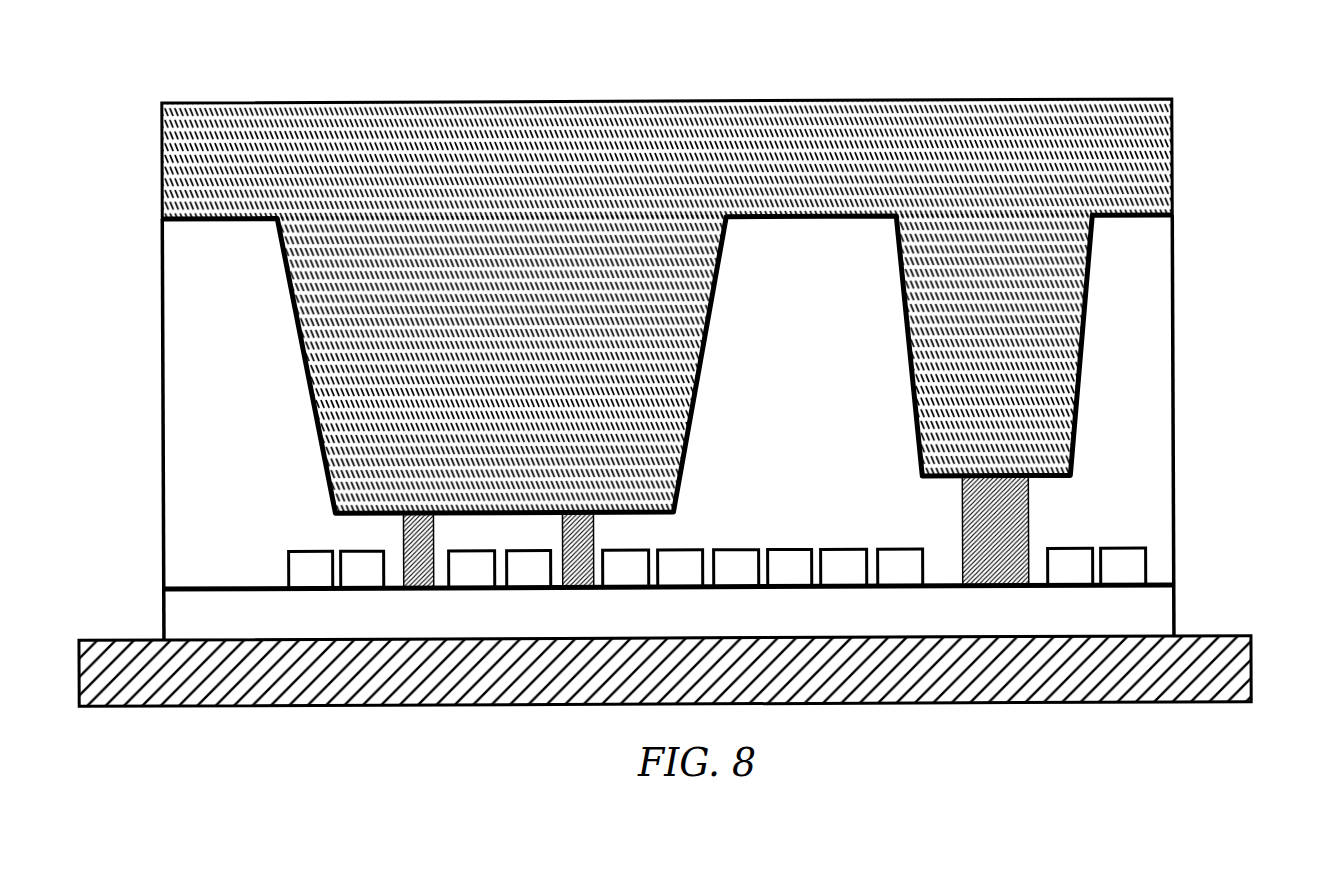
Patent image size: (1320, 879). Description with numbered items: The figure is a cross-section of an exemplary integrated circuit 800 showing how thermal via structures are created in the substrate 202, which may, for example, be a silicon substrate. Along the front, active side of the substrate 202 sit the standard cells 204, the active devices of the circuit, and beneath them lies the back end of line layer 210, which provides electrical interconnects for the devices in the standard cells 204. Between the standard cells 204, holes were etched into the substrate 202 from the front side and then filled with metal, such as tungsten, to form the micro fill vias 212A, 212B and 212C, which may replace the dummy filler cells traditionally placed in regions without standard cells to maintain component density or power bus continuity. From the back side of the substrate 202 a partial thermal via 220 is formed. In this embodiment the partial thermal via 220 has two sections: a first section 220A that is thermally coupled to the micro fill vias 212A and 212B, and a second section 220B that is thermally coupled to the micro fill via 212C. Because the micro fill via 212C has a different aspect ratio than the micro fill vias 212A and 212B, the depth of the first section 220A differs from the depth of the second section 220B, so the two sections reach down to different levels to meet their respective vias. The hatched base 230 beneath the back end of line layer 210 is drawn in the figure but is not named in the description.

The integrated circuit 800 is at (1232, 124).
The partial thermal via 220 is at (1172, 152).
The first section 220A is at (502, 364).
The second section 220B is at (994, 344).
The substrate 202 is at (668, 427).
The standard cells 204 is at (1060, 545).
The back end of line layer 210 is at (669, 612).
The micro fill via 212A is at (403, 533).
The micro fill via 212B is at (567, 545).
The micro fill via 212C is at (973, 547).
The substrate 230 is at (1193, 633).